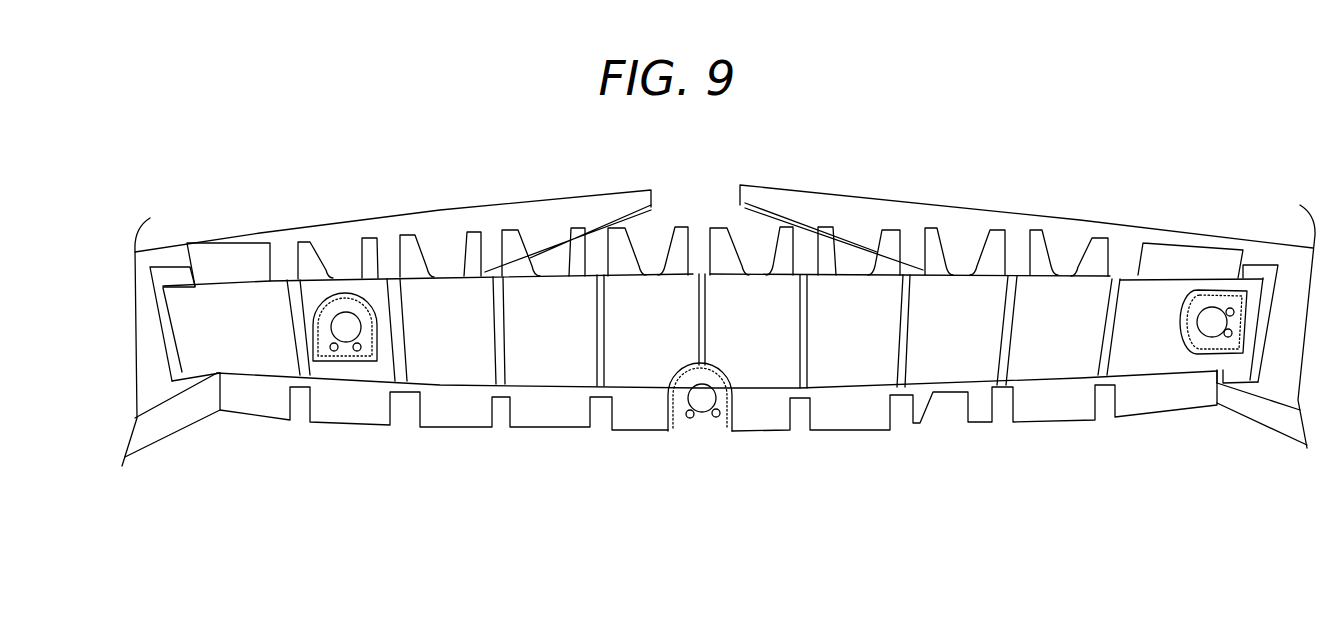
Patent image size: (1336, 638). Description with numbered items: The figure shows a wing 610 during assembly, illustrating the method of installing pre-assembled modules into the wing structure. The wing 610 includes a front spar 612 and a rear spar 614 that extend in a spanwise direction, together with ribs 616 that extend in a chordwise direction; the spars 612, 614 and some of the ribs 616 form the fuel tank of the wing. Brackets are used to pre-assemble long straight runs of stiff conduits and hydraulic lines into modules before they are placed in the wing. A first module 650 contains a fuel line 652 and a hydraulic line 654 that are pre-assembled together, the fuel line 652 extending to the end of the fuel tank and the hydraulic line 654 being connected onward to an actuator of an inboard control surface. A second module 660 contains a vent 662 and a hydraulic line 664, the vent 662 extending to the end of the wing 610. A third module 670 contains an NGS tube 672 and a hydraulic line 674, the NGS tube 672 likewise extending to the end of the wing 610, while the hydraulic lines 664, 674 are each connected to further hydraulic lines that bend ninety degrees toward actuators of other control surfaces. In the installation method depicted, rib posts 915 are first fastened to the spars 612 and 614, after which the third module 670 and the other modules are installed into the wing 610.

The wing 610 is at (1125, 132).
The front spar 612 is at (957, 207).
The rear spar 614 is at (558, 200).
The ribs 616 is at (573, 428).
The first module 650 is at (318, 309).
The fuel line 652 is at (349, 327).
The hydraulic line 654 is at (357, 350).
The second module 660 is at (678, 430).
The vent 662 is at (697, 391).
The hydraulic line 664 is at (714, 417).
The third module 670 is at (1195, 342).
The NGS tube 672 is at (1210, 320).
The hydraulic line 674 is at (1232, 309).
The rib posts 915 is at (167, 267).